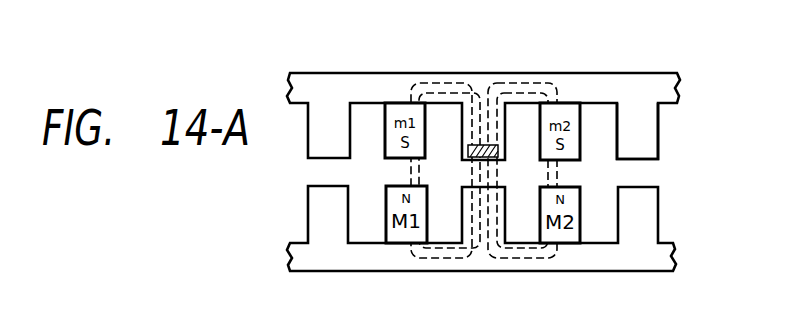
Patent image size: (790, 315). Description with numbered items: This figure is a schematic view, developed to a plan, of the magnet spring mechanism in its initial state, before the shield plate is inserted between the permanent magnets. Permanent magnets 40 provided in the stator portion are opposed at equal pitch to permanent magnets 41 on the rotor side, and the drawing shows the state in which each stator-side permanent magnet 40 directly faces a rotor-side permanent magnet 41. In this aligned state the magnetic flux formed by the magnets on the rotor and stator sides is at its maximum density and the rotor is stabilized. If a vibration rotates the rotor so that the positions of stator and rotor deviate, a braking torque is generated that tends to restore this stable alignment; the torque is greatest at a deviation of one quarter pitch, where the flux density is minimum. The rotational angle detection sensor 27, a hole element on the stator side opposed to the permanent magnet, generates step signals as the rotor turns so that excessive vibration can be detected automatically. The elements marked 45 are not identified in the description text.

The rotational angle detection sensor 27 is at (482, 145).
The permanent magnets 40 is at (570, 103).
The permanent magnets 41 is at (567, 243).
The pole teeth 45 is at (502, 110).